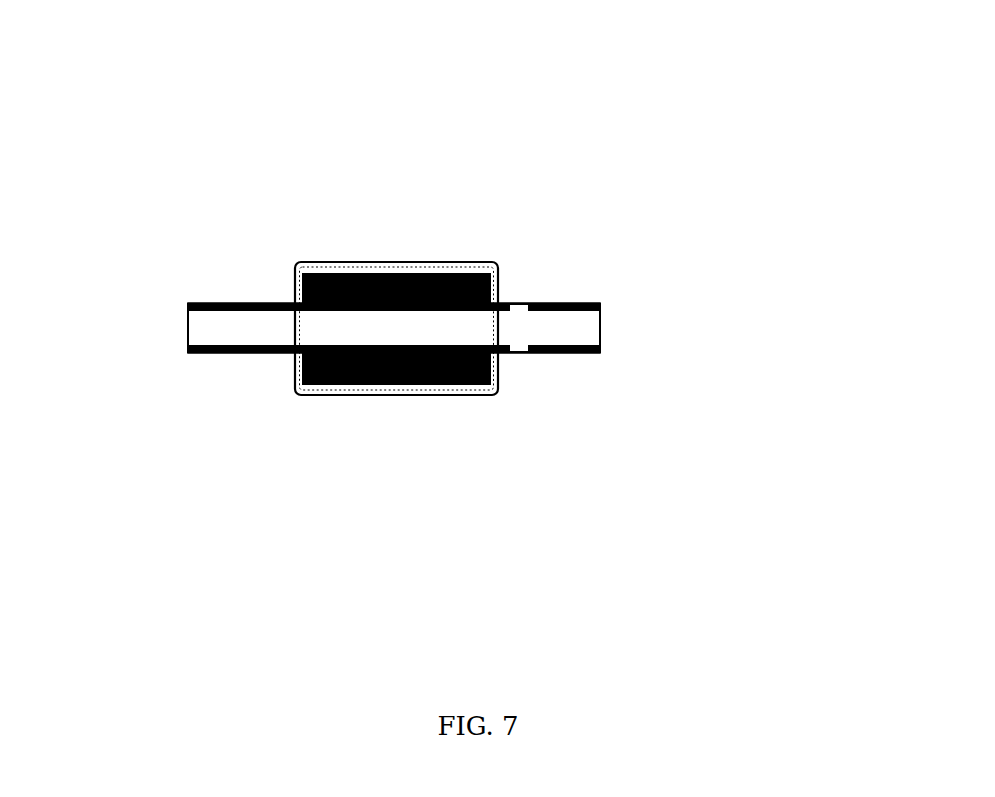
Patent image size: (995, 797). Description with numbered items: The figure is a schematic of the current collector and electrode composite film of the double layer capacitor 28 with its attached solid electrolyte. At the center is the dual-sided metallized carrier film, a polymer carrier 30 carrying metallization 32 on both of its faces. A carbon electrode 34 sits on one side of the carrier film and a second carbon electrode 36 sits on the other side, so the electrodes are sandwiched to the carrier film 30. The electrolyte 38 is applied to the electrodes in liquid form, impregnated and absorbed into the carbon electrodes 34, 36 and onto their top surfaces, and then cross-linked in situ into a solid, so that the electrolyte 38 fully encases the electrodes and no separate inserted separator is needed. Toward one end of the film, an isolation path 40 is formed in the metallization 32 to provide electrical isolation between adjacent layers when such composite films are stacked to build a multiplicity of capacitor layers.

The double layer capacitor 28 is at (704, 255).
The polymer carrier 30 is at (176, 327).
The metallization 32 is at (248, 288).
The carbon electrode 34 is at (445, 258).
The carbon electrode 36 is at (446, 400).
The electrolyte 38 is at (317, 248).
The isolation path 40 is at (591, 287).